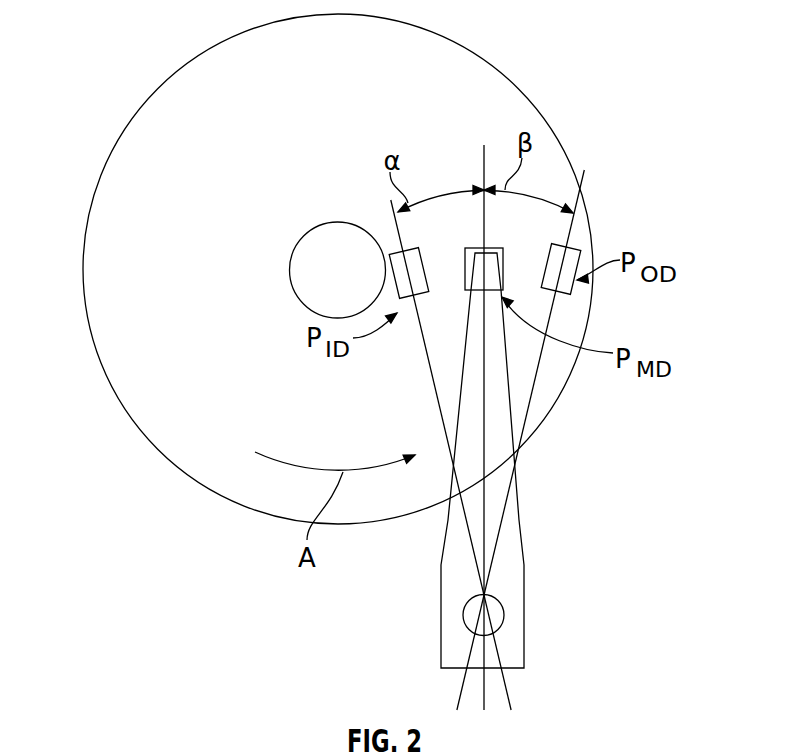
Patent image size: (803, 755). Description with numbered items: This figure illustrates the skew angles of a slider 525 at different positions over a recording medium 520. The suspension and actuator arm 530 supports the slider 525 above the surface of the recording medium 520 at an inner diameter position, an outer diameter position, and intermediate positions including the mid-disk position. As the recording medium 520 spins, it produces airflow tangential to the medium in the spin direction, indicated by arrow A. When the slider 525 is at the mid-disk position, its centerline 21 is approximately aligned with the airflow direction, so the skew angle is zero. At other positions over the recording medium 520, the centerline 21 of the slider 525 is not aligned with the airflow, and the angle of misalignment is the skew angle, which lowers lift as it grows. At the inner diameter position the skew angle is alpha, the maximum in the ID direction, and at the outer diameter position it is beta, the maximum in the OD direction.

The recording medium 520 is at (167, 98).
The centerline 21 is at (483, 168).
The slider 525 is at (468, 270).
The suspension and actuator arm 530 is at (553, 610).